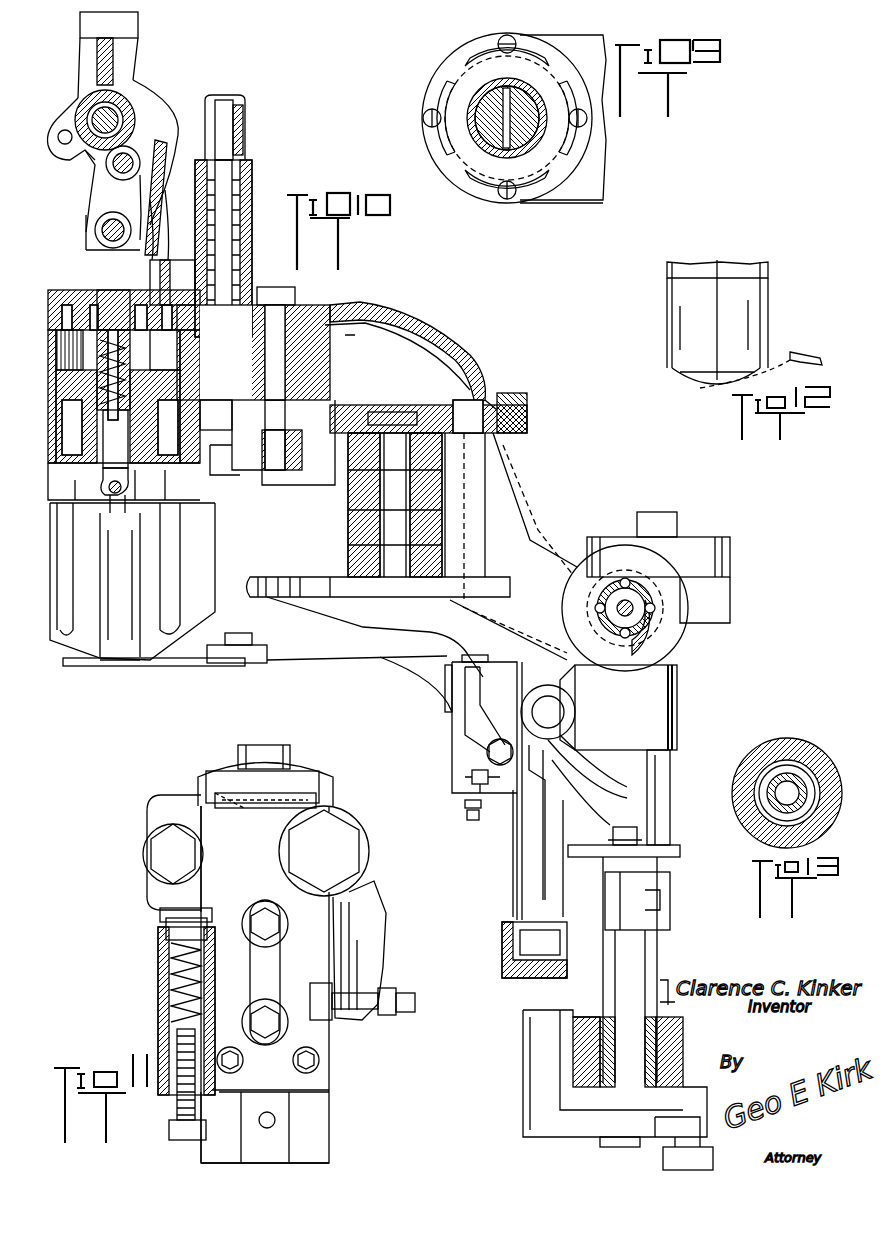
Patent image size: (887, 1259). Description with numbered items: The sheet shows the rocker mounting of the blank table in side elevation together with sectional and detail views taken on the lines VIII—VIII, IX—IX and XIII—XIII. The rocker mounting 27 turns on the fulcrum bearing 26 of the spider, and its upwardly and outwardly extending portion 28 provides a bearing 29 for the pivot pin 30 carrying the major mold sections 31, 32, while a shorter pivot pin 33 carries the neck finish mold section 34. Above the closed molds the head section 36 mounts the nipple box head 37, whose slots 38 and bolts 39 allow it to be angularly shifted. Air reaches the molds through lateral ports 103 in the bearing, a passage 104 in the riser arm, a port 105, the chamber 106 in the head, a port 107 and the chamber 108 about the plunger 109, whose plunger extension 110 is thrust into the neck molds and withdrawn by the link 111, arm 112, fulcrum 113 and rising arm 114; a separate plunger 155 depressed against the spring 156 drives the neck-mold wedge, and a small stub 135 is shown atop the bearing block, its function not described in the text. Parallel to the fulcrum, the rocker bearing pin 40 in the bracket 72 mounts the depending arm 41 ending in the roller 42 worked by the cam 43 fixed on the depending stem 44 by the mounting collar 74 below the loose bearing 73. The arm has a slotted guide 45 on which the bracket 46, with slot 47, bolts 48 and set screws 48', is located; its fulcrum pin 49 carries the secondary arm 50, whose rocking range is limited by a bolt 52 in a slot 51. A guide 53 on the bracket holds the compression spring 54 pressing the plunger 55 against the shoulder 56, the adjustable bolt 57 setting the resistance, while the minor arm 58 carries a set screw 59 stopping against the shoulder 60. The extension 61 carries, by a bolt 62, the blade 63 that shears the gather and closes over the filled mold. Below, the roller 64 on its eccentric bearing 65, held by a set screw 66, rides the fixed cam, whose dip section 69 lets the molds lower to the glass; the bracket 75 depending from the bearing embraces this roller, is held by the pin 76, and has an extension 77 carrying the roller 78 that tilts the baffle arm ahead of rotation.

In FIG. 10, the fulcrum bearing 26 is at (640, 585).
In FIG. 10, the rocker mounting 27 is at (660, 702).
In FIG. 10, the upwardly and outwardly extending portion 28 is at (520, 482).
In FIG. 10, the bearing 29 is at (380, 405).
In FIG. 10, the pivot pin 30 is at (372, 478).
In FIG. 12, the major mold section 31 is at (668, 305).
In FIG. 10, the major mold section 31 is at (235, 485).
In FIG. 12, the major mold section 32 is at (770, 292).
In FIG. 10, the pivot pin 33 is at (278, 470).
In FIG. 10, the neck finish mold section 34 is at (215, 430).
In FIG. 9, the head section 36 is at (595, 180).
In FIG. 10, the head section 36 is at (355, 320).
In FIG. 10, the nipple box head 37 is at (182, 280).
In FIG. 9, the slots 38 is at (540, 203).
In FIG. 9, the bolts 39 is at (585, 118).
In FIG. 10, the rocker bearing pin 40 is at (555, 712).
In FIG. 11, the depending arm 41 is at (331, 1156).
In FIG. 10, the depending arm 41 is at (518, 828).
In FIG. 10, the roller 42 is at (500, 950).
In FIG. 10, the cam 43 is at (500, 975).
In FIG. 13, the depending stem 44 is at (795, 765).
In FIG. 10, the depending stem 44 is at (660, 955).
In FIG. 11, the slotted guide 45 is at (292, 1112).
In FIG. 11, the bracket 46 is at (332, 1047).
In FIG. 11, the slot 47 is at (280, 966).
In FIG. 11, the bolts 48 is at (268, 973).
In FIG. 11, the set screws 48' is at (305, 1060).
In FIG. 10, the set screws 48' is at (464, 781).
In FIG. 11, the fulcrum pin 49 is at (338, 833).
In FIG. 10, the fulcrum pin 49 is at (445, 688).
In FIG. 11, the secondary arm 50 is at (147, 903).
In FIG. 11, the slot 51 is at (147, 832).
In FIG. 11, the bolt 52 is at (160, 856).
In FIG. 11, the guide 53 is at (160, 990).
In FIG. 11, the compression spring 54 is at (169, 958).
In FIG. 11, the plunger 55 is at (166, 932).
In FIG. 11, the shoulder 56 is at (160, 915).
In FIG. 11, the adjustable bolt 57 is at (169, 1137).
In FIG. 10, the adjustable bolt 57 is at (467, 815).
In FIG. 11, the minor arm 58 is at (386, 908).
In FIG. 10, the minor arm 58 is at (468, 720).
In FIG. 11, the set screw 59 is at (392, 990).
In FIG. 10, the set screw 59 is at (489, 752).
In FIG. 11, the shoulder 60 is at (310, 1002).
In FIG. 11, the extension 61 is at (315, 763).
In FIG. 10, the extension 61 is at (350, 645).
In FIG. 11, the bolt 62 is at (276, 745).
In FIG. 10, the bolt 62 is at (248, 638).
In FIG. 11, the blade 63 is at (258, 812).
In FIG. 10, the blade 63 is at (185, 668).
In FIG. 13, the roller 64 is at (778, 765).
In FIG. 10, the roller 64 is at (575, 1068).
In FIG. 13, the eccentric bearing 65 is at (808, 772).
In FIG. 10, the eccentric bearing 65 is at (585, 1080).
In FIG. 10, the set screw 66 is at (673, 980).
In FIG. 12, the dip or short radius section 69 is at (805, 352).
In FIG. 10, the bracket 72 is at (590, 760).
In FIG. 10, the bearing 73 is at (670, 770).
In FIG. 10, the mounting collar 74 is at (672, 890).
In FIG. 10, the bracket 75 is at (525, 1122).
In FIG. 10, the pin 76 is at (600, 1145).
In FIG. 10, the extension 77 is at (660, 1137).
In FIG. 10, the roller 78 is at (665, 1165).
In FIG. 10, the lateral ports 103 is at (603, 615).
In FIG. 10, the passage 104 is at (512, 395).
In FIG. 9, the port 105 is at (520, 100).
In FIG. 10, the port 105 is at (478, 390).
In FIG. 10, the chamber 106 is at (432, 345).
In FIG. 10, the port 107 is at (295, 330).
In FIG. 10, the chamber 108 is at (48, 296).
In FIG. 10, the plunger 109 is at (100, 470).
In FIG. 10, the plunger extension 110 is at (130, 478).
In FIG. 10, the link 111 is at (162, 205).
In FIG. 10, the arm 112 is at (140, 138).
In FIG. 10, the fulcrum 113 is at (140, 96).
In FIG. 10, the arm 114 is at (133, 44).
In FIG. 10, the stub 135 is at (688, 494).
In FIG. 10, the plunger 155 is at (246, 112).
In FIG. 10, the spring 156 is at (250, 192).
In FIG. 10, the section line IX— IX is at (172, 265).
In FIG. 10, the section line VIII— VIII is at (694, 908).
In FIG. 10, the section line XIII— XIII is at (694, 1027).